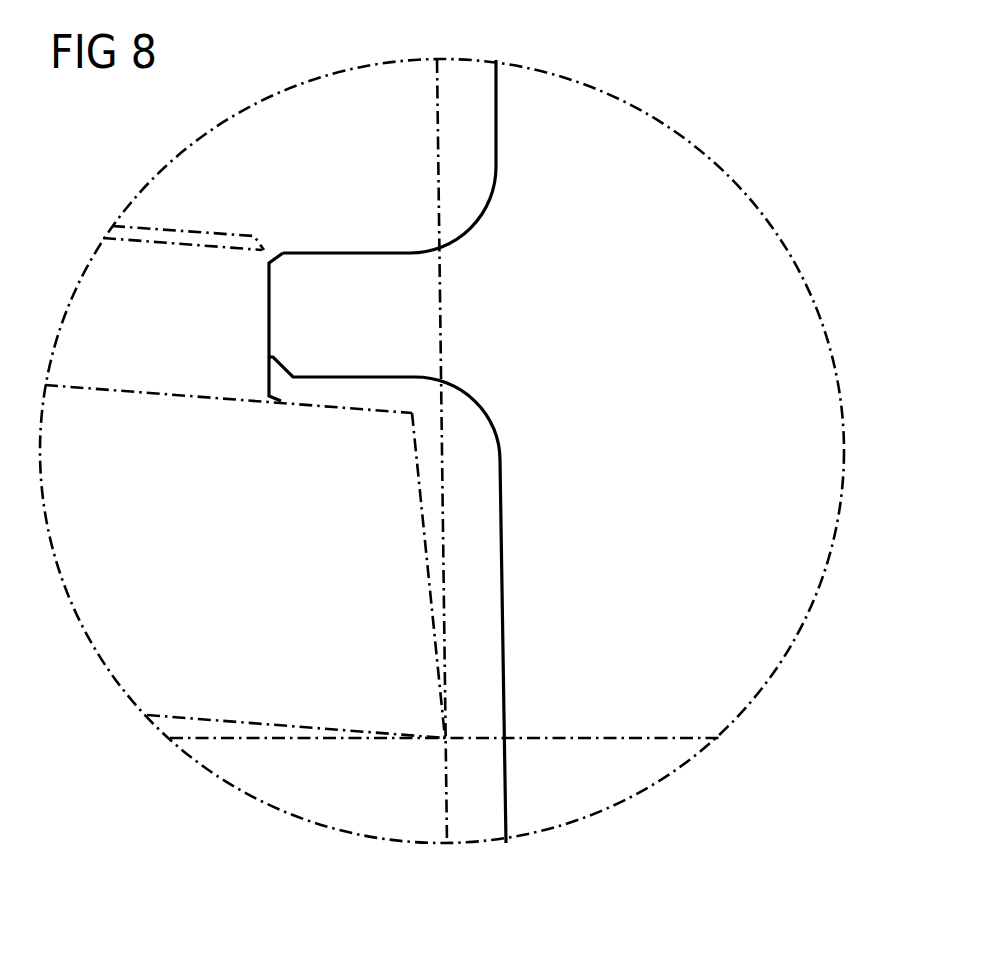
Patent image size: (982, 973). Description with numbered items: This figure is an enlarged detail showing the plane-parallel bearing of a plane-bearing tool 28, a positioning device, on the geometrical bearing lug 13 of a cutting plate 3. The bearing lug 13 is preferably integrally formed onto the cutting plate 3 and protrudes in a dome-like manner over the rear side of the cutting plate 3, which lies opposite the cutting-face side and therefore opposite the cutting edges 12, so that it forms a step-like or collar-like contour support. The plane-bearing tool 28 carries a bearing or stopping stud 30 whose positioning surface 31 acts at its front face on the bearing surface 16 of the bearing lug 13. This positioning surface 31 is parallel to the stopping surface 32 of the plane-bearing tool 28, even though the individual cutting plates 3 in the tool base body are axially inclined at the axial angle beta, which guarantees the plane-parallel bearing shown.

The plane-bearing tool 28 is at (592, 113).
The geometrical bearing lug 13 is at (102, 268).
The cutting plate 3 is at (254, 565).
The cutting edges 12 is at (444, 738).
The stopping stud 30 is at (348, 282).
The bearing surface 16 is at (268, 257).
The positioning surface 31 is at (268, 317).
The stopping surface 32 is at (507, 830).